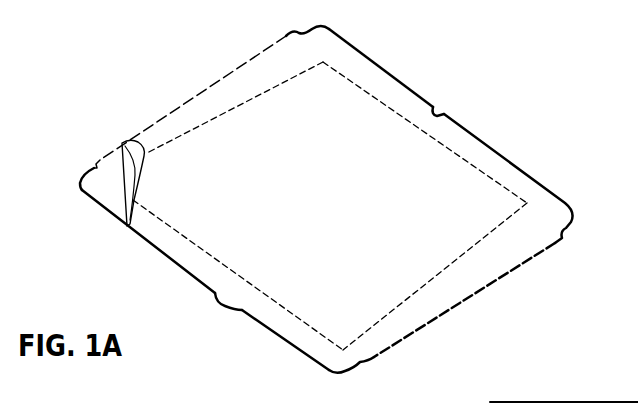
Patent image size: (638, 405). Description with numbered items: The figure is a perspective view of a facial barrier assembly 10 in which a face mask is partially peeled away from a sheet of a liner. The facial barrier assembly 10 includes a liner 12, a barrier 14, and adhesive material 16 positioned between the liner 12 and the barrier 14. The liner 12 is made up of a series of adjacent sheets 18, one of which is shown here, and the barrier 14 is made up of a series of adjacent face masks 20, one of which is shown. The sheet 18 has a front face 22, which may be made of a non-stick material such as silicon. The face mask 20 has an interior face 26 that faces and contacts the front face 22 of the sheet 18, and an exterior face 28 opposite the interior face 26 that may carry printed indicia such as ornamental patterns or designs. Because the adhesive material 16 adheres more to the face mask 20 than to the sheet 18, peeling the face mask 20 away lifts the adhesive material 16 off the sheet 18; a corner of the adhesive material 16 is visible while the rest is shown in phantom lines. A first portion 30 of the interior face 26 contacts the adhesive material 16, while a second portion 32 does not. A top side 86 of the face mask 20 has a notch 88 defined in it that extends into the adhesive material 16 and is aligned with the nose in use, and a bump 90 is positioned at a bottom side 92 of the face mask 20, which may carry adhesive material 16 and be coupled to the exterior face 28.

The facial barrier assembly 10 is at (177, 42).
The liner 12 is at (106, 197).
The barrier 14 is at (318, 40).
The adhesive material 16 is at (131, 139).
The sheet 18 is at (89, 178).
The face mask 20 is at (507, 174).
The front face 22 is at (108, 172).
The interior face 26 is at (138, 182).
The exterior face 28 is at (202, 233).
The first portion 30 is at (500, 257).
The second portion 32 is at (417, 264).
The top side 86 is at (402, 78).
The notch 88 is at (444, 106).
The bump 90 is at (218, 301).
The bottom side 92 is at (278, 337).